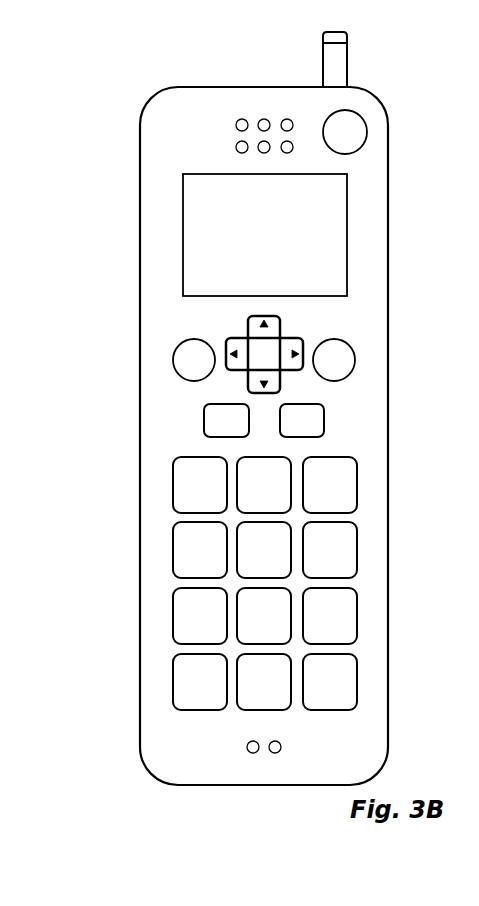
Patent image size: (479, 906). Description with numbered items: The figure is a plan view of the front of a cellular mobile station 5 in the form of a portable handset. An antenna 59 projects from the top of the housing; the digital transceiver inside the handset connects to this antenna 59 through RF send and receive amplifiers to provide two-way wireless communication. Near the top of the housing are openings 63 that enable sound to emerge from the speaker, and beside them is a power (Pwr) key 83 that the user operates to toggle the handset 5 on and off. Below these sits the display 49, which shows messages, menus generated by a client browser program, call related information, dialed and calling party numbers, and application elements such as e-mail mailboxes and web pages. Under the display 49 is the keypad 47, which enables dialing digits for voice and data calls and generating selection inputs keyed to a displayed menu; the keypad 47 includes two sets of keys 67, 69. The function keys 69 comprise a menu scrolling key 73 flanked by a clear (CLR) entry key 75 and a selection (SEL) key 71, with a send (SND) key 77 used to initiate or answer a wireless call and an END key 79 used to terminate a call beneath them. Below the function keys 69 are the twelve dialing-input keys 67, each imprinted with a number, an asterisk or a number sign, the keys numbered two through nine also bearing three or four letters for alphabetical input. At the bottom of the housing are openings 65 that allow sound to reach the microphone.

The mobile station 5 is at (140, 197).
The antenna 59 is at (320, 75).
The openings 63 is at (238, 120).
The power (Pwr) key 83 is at (368, 117).
The display 49 is at (348, 217).
The clear (CLR) entry key 75 is at (173, 348).
The menu scrolling key 73 is at (305, 337).
The selection (SEL) key 71 is at (356, 350).
The send (SND) key 77 is at (204, 420).
The END key 79 is at (324, 420).
The function keys 69 is at (254, 347).
The dialing-input keys 67 is at (130, 458).
The keypad 47 is at (265, 483).
The openings 65 is at (247, 752).